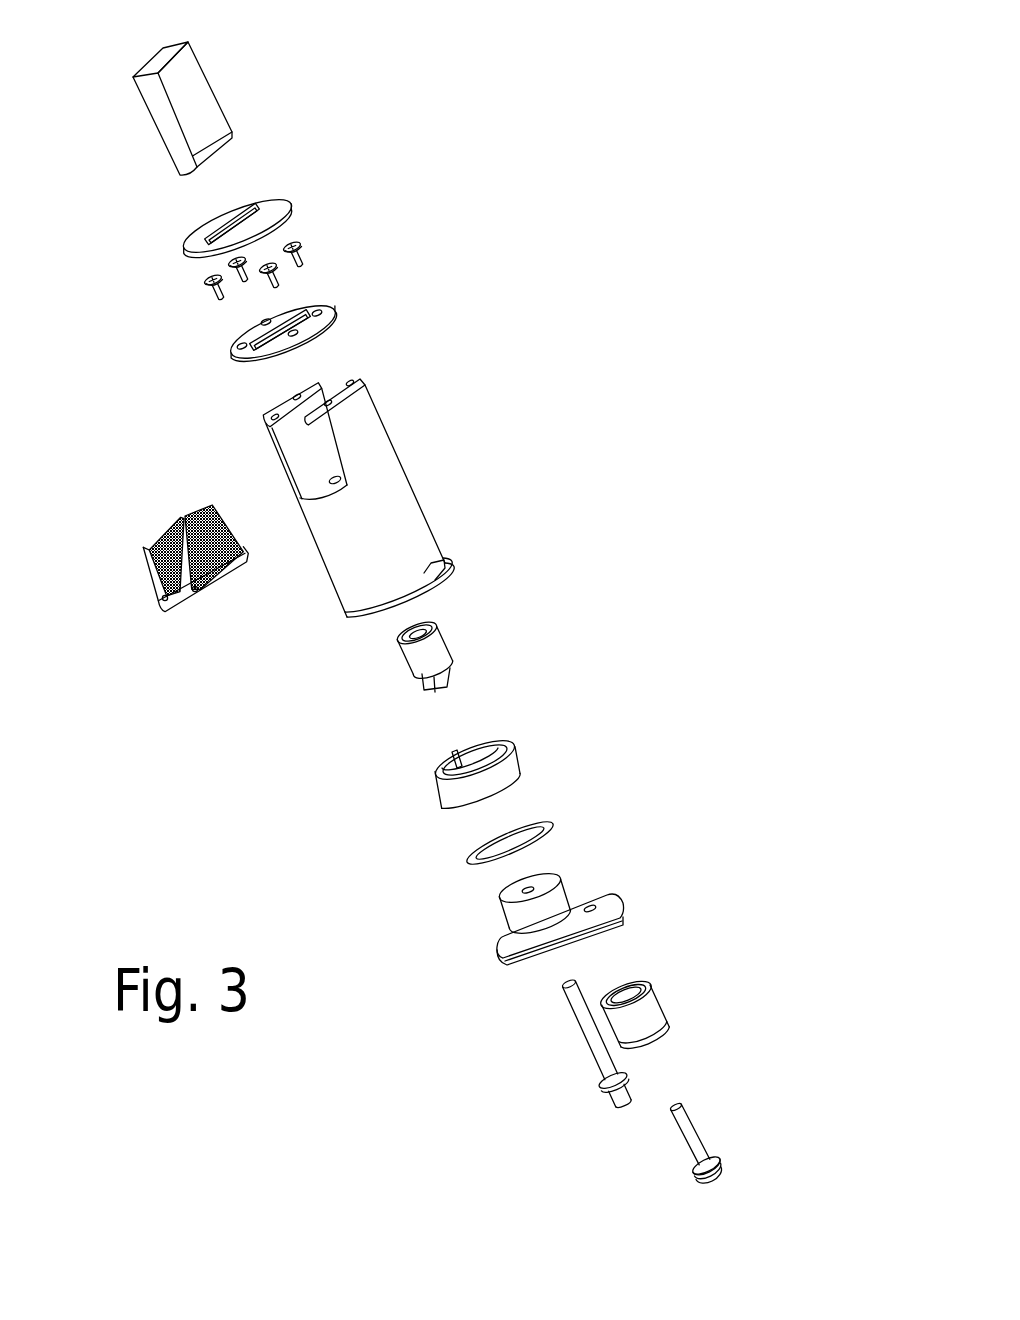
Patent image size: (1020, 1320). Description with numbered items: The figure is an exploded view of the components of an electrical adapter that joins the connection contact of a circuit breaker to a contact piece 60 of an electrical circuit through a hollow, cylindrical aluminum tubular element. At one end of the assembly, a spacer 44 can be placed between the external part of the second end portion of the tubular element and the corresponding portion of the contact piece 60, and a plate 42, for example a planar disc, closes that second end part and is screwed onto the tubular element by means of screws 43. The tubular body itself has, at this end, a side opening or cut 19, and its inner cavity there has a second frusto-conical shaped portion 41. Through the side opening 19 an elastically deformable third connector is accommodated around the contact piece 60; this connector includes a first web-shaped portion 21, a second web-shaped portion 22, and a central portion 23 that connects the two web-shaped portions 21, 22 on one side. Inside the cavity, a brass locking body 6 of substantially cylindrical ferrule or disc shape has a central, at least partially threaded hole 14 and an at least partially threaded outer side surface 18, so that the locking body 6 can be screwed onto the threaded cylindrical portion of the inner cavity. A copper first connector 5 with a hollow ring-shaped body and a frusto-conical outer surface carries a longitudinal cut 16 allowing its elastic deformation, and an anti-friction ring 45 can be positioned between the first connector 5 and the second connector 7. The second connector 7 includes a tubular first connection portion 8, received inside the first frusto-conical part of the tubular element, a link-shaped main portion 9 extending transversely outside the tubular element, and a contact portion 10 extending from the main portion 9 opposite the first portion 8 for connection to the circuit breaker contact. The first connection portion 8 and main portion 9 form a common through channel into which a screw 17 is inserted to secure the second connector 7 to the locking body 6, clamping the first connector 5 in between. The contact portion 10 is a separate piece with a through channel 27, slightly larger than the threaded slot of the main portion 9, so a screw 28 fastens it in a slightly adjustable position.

The contact piece 60 is at (196, 105).
The spacer 44 is at (193, 240).
The screws 43 is at (275, 287).
The plate 42 is at (232, 355).
The side opening or cut 19 is at (319, 498).
The second frusto-conical shaped portion 41 is at (304, 470).
The second web-shaped portion 22 is at (208, 543).
The first web-shaped portion 21 is at (151, 571).
The central portion 23 is at (216, 598).
The hole 14 is at (408, 630).
The outer side surface 18 is at (398, 668).
The locking body 6 is at (430, 660).
The longitudinal cut 16 is at (457, 755).
The first connector 5 is at (449, 775).
The anti-friction ring 45 is at (468, 857).
The first connection portion 8 is at (550, 902).
The second connector 7 is at (613, 959).
The main portion 9 is at (500, 960).
The through channel 27 is at (622, 995).
The screw 17 is at (600, 1062).
The contact portion 10 is at (663, 1029).
The screw 28 is at (689, 1141).